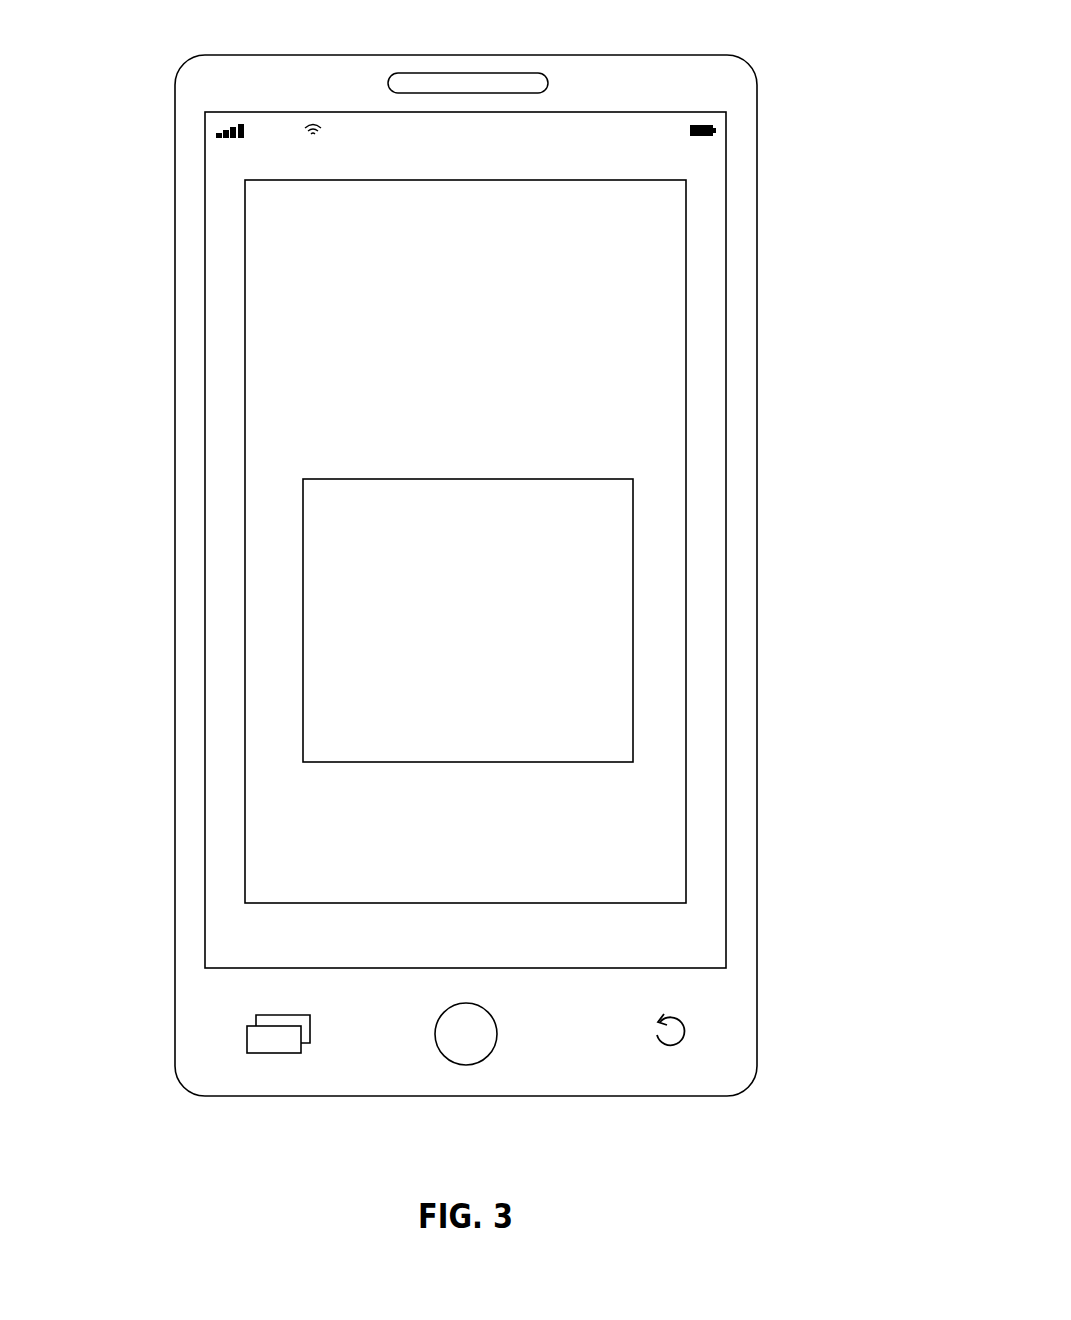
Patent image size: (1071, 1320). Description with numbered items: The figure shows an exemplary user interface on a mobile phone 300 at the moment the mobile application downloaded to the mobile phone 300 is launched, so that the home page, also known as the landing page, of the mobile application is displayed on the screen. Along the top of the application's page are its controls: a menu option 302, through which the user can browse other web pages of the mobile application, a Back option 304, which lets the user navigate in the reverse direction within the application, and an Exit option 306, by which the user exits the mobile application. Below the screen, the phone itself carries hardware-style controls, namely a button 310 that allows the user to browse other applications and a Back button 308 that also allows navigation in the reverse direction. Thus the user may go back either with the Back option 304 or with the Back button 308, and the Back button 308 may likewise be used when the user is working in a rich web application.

The mobile phone 300 is at (748, 29).
The menu option 302 is at (276, 305).
The Back option 304 is at (416, 305).
The Exit option 306 is at (655, 305).
The Back button 308 is at (705, 1027).
The button 310 is at (226, 1036).